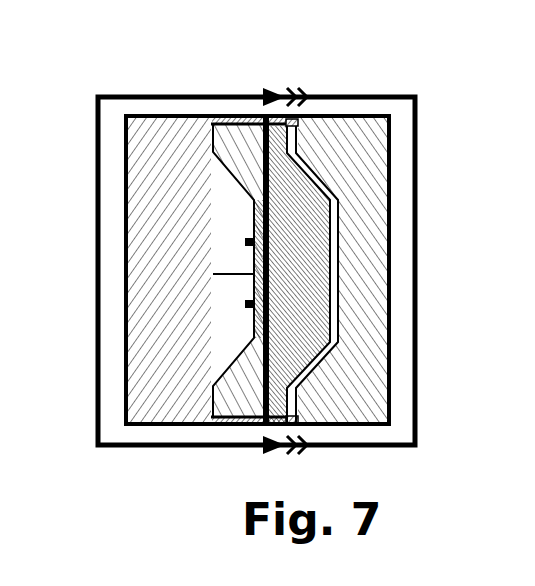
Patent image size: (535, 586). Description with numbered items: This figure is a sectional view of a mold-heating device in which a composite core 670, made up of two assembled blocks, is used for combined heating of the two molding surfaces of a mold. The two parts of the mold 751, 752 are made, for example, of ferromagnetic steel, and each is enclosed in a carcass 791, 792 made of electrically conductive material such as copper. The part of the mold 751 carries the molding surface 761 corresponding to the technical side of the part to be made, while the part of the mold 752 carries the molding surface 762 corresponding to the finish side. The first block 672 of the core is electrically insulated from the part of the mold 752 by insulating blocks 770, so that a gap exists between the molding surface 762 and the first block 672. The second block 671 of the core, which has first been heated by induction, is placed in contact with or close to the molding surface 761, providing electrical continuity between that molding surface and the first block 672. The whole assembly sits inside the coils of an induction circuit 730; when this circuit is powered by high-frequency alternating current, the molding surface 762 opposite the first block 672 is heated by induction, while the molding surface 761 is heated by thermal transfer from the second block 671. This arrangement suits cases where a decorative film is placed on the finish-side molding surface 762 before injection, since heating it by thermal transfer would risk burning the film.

The composite core 670 is at (247, 104).
The second block of the core 671 is at (205, 143).
The first block of the core 672 is at (300, 408).
The induction circuit 730 is at (182, 463).
The part of the mold 751 is at (157, 225).
The part of the mold 752 is at (365, 240).
The molding surface 761 is at (213, 382).
The molding surface 762 is at (338, 223).
The insulating blocks 770 is at (338, 116).
The carcass 791 is at (125, 390).
The carcass 792 is at (388, 340).